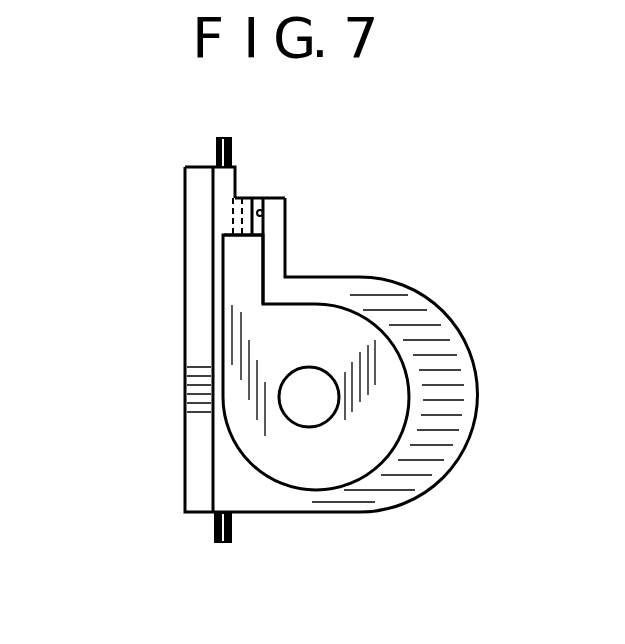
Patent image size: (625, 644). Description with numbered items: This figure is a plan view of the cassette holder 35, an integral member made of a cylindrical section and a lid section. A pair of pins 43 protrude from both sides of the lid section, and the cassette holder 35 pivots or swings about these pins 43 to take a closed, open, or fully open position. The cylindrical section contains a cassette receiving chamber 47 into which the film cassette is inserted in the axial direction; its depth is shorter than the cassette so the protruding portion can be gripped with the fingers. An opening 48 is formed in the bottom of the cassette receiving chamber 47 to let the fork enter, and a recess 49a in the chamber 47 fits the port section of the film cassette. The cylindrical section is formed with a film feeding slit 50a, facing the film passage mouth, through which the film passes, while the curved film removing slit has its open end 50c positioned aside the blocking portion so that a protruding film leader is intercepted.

The cassette holder 35 is at (184, 344).
The pins 43 is at (232, 148).
The cassette receiving chamber 47 is at (376, 329).
The opening 48 is at (320, 423).
The recess 49a is at (242, 286).
The film feeding slit 50a is at (242, 223).
The open end 50c is at (283, 208).